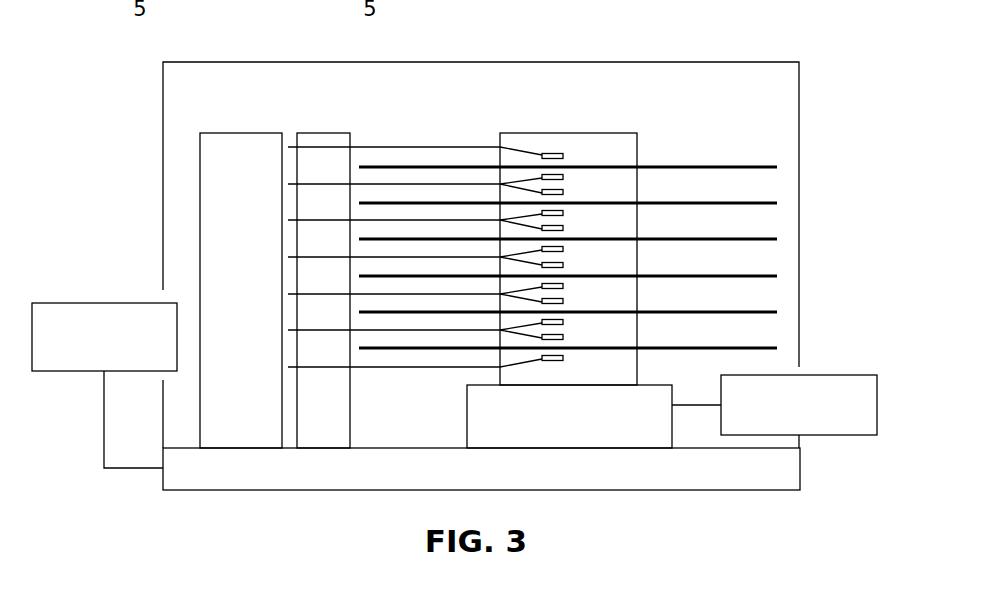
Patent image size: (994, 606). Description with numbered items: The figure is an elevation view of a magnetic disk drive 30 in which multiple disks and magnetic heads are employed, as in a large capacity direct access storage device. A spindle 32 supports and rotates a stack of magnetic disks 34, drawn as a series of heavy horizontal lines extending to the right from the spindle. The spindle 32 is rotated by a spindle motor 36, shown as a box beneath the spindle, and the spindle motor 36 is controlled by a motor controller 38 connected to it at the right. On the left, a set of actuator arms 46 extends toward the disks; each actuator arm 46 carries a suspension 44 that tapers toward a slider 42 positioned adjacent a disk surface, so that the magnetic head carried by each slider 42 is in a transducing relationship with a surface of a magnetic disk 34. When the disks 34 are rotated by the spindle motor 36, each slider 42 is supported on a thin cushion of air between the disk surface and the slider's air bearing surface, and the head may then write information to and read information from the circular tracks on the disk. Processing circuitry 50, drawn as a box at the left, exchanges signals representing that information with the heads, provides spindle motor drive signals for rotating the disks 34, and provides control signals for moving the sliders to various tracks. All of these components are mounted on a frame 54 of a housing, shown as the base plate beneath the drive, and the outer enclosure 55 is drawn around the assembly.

The magnetic disk drive 30 is at (454, 280).
The spindle 32 is at (625, 134).
The magnetic disk 34 is at (768, 168).
The spindle motor 36 is at (558, 428).
The motor controller 38 is at (836, 437).
The slider 42 is at (563, 175).
The suspension 44 is at (532, 183).
The actuator arm 46 is at (472, 185).
The processing circuitry 50 is at (75, 302).
The frame 54 is at (217, 490).
The housing 55 is at (738, 61).